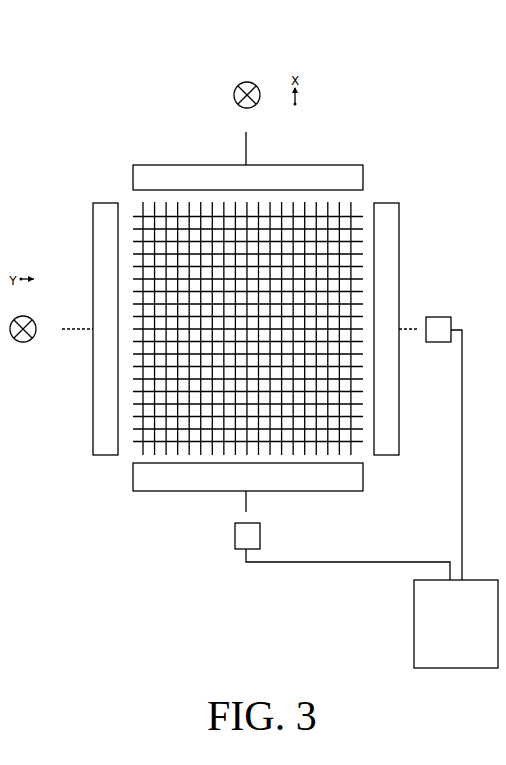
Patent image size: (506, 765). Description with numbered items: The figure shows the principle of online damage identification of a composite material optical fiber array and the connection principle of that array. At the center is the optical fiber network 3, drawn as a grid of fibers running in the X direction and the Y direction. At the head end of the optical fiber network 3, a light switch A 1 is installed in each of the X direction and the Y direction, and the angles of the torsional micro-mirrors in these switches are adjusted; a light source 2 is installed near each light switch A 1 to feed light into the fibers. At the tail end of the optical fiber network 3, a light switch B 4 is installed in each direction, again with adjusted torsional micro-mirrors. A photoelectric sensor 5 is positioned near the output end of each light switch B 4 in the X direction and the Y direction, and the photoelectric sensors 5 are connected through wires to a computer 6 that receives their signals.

The light switch A 1 is at (248, 101).
The light source 2 is at (255, 60).
The optical fiber network 3 is at (255, 234).
The light switch B 4 is at (440, 314).
The photoelectric sensor 5 is at (466, 297).
The computer 6 is at (460, 622).